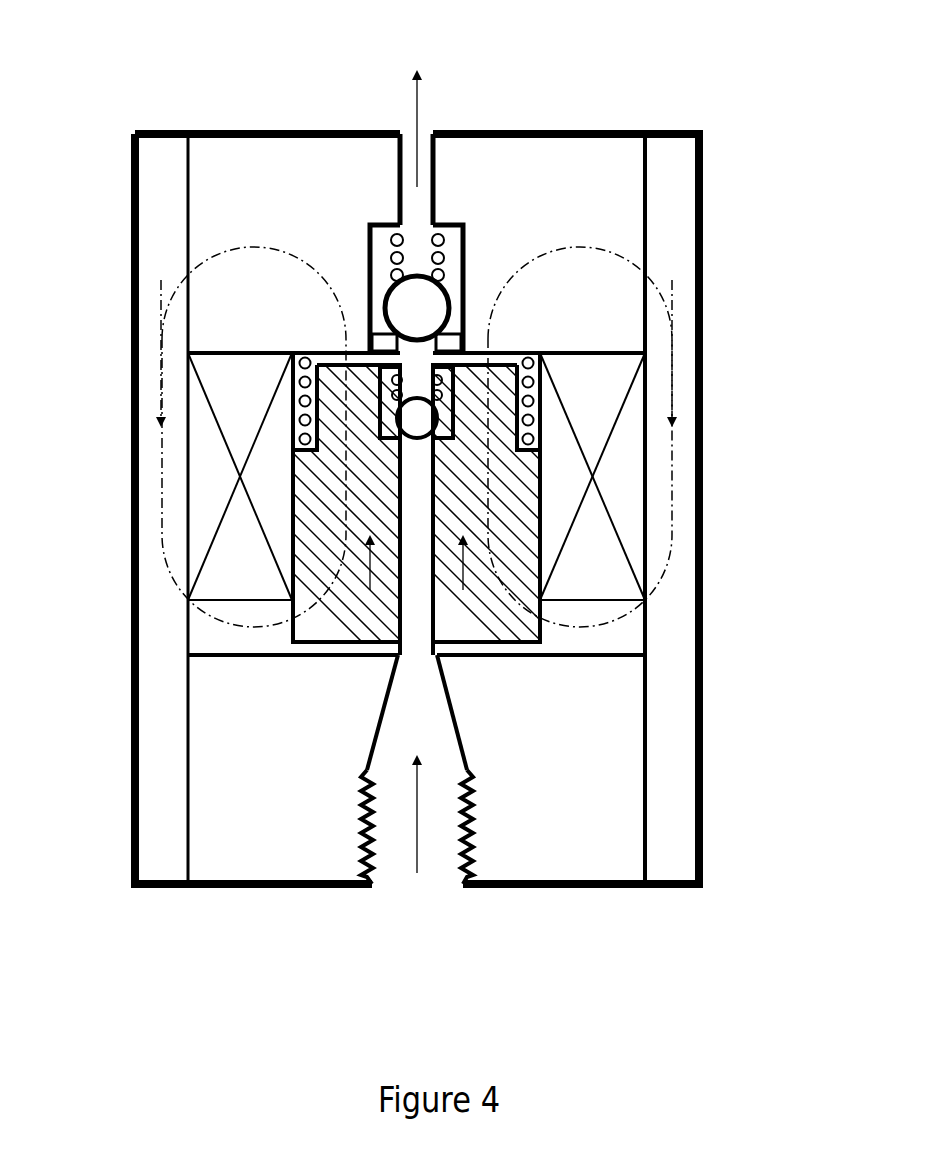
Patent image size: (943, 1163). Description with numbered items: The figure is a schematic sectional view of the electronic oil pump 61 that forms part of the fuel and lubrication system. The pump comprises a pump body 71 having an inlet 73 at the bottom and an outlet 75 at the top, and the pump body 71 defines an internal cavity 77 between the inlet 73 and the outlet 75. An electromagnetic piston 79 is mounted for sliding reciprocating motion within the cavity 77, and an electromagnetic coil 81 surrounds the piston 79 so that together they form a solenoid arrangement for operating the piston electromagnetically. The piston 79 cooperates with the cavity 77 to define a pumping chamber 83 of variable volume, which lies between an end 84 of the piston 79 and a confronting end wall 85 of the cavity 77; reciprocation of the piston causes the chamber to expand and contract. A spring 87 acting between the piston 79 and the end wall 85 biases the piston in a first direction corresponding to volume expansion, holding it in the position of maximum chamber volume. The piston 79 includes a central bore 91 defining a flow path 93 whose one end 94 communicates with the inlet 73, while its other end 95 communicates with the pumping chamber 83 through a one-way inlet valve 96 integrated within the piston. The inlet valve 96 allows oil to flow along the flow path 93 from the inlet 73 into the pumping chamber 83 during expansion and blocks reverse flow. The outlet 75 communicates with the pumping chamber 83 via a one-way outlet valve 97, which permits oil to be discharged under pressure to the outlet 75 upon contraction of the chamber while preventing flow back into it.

The electronic oil pump 61 is at (100, 96).
The pump body 71 is at (131, 672).
The inlet 73 is at (423, 892).
The outlet 75 is at (423, 145).
The internal cavity 77 is at (296, 475).
The electromagnetic piston 79 is at (317, 532).
The electromagnetic coil 81 is at (610, 483).
The pumping chamber 83 is at (470, 352).
The end of the piston 84 is at (290, 350).
The end wall of the cavity 85 is at (333, 350).
The spring 87 is at (417, 418).
The central bore 91 is at (435, 600).
The flow path 93 is at (440, 522).
The end of flow path 94 is at (422, 655).
The other end of flow path 95 is at (423, 372).
The one-way inlet valve 96 is at (540, 432).
The one-way outlet valve 97 is at (417, 298).